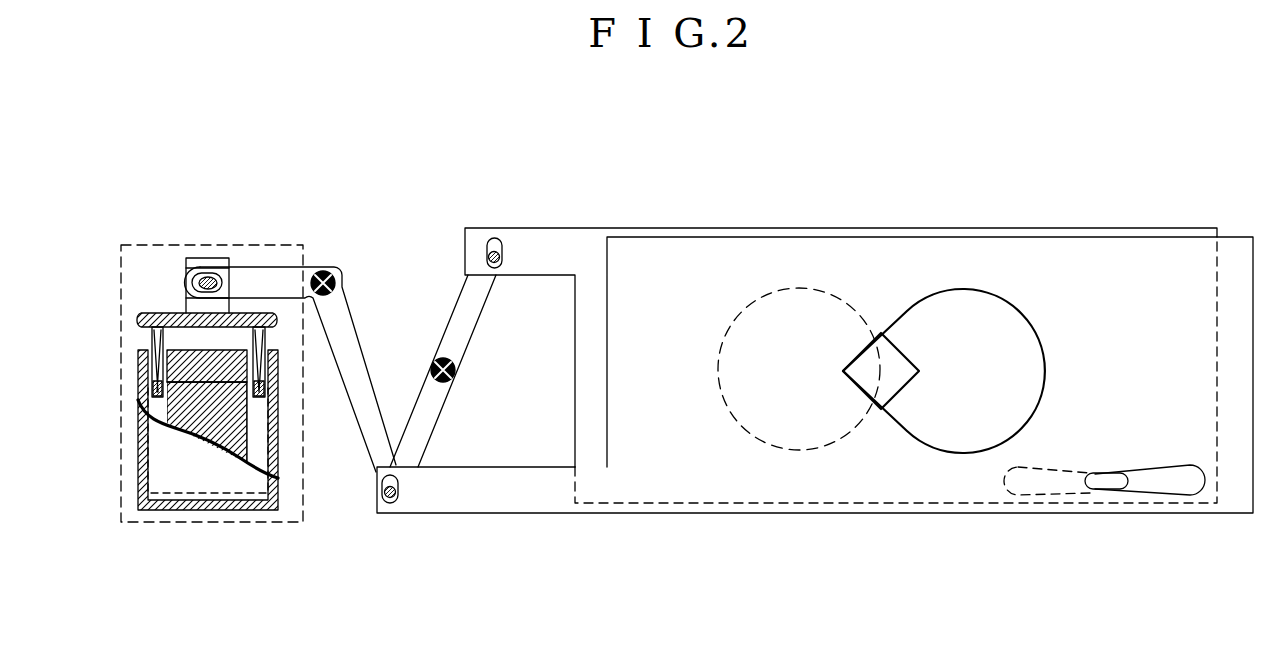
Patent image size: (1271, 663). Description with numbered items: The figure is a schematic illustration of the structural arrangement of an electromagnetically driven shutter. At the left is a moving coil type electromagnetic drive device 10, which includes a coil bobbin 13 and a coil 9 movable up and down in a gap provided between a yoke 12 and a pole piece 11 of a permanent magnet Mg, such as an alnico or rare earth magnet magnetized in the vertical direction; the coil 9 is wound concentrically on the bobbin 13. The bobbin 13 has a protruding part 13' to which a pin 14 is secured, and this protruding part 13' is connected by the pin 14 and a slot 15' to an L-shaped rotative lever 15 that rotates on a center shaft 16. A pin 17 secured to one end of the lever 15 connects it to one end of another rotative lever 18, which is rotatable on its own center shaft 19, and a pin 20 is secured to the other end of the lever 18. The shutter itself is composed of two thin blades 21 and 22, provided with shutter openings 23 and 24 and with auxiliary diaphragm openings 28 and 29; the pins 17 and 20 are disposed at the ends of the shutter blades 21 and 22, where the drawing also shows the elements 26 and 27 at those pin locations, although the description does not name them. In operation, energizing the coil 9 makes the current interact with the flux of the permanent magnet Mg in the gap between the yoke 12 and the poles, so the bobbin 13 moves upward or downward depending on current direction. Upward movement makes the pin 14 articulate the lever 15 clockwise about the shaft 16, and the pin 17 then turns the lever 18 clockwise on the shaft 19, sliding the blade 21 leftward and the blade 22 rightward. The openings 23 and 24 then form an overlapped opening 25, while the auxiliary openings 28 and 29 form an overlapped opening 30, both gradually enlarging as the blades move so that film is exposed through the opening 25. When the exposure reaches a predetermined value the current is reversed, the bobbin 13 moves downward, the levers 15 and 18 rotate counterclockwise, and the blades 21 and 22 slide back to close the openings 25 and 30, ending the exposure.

The coil 9 is at (150, 352).
The electromagnetic drive device 10 is at (205, 522).
The pole piece 11 is at (150, 386).
The yoke 12 is at (190, 374).
The coil bobbin 13 is at (178, 319).
The protruding part 13' is at (210, 256).
The pin 14 is at (185, 280).
The L-shaped rotative lever 15 is at (290, 348).
The slot 15' is at (235, 246).
The center shaft 16 is at (340, 280).
The pin 17 is at (385, 495).
The rotative lever 18 is at (462, 330).
The center shaft 19 is at (456, 372).
The pin 20 is at (500, 243).
The shutter blade 21 is at (530, 495).
The shutter blade 22 is at (572, 248).
The shutter opening 23 is at (949, 453).
The shutter opening 24 is at (777, 450).
The overlapped opening 25 is at (872, 372).
The pin 26 is at (503, 258).
The slot 27 is at (397, 482).
The auxiliary diaphragm opening 28 is at (1157, 491).
The auxiliary diaphragm opening 29 is at (1005, 482).
The overlapped opening 30 is at (1106, 482).
The permanent magnet Mg is at (198, 425).